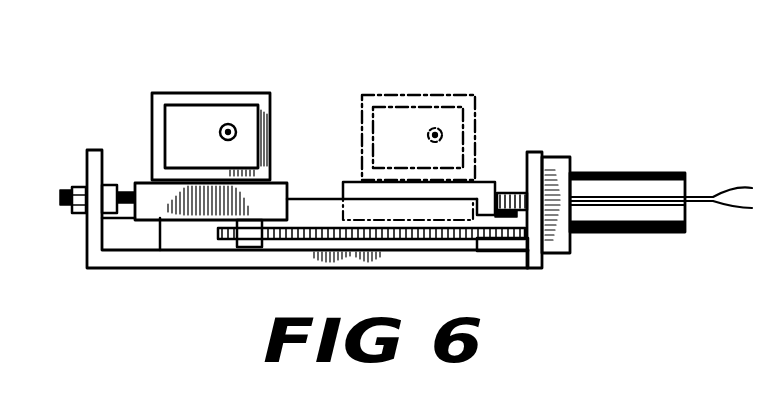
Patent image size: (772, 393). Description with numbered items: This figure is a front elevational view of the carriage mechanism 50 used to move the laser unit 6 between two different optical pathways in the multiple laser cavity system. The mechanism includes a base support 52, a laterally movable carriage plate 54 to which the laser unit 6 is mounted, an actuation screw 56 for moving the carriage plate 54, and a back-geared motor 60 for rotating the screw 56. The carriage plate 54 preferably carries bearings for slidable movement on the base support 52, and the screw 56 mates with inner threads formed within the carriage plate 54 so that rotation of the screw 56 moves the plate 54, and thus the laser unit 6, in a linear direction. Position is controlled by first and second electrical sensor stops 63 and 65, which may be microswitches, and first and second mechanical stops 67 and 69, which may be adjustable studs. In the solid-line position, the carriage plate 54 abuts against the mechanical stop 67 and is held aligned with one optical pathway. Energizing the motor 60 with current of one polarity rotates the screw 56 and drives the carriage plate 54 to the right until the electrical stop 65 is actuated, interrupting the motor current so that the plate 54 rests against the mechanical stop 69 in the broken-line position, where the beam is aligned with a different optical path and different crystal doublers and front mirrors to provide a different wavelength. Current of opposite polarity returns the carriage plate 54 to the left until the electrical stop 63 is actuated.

The wafer positioning assembly 50 is at (133, 72).
The base support 52 is at (198, 259).
The carriage plate 54 is at (277, 183).
The actuation screw 56 is at (326, 226).
The laser unit 6 is at (205, 97).
The back-geared motor 60 is at (613, 172).
The first electrical sensor stop 63 is at (117, 185).
The second electrical sensor stop 65 is at (512, 190).
The first mechanical stop 67 is at (135, 185).
The second mechanical stop 69 is at (500, 188).